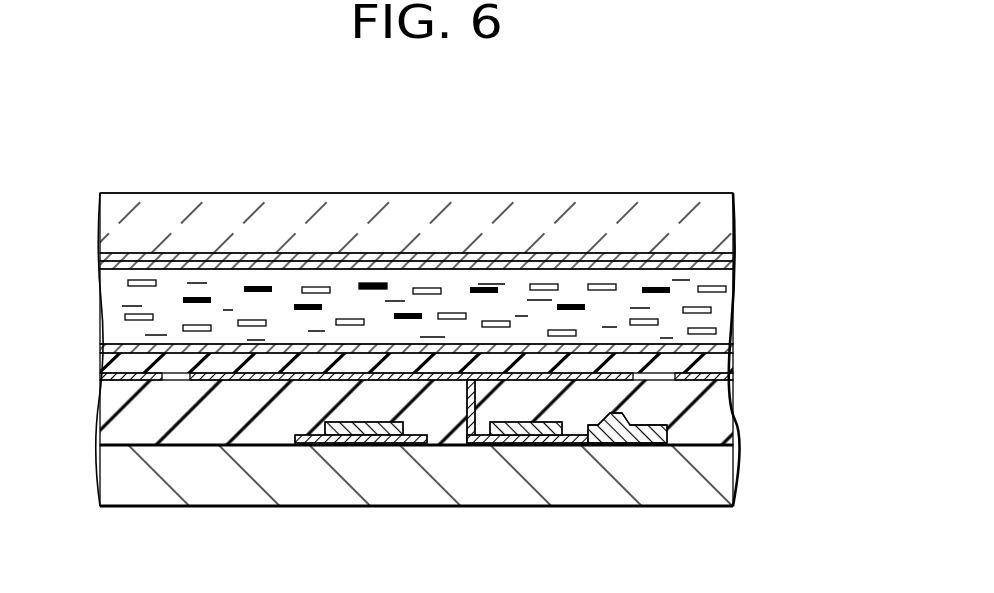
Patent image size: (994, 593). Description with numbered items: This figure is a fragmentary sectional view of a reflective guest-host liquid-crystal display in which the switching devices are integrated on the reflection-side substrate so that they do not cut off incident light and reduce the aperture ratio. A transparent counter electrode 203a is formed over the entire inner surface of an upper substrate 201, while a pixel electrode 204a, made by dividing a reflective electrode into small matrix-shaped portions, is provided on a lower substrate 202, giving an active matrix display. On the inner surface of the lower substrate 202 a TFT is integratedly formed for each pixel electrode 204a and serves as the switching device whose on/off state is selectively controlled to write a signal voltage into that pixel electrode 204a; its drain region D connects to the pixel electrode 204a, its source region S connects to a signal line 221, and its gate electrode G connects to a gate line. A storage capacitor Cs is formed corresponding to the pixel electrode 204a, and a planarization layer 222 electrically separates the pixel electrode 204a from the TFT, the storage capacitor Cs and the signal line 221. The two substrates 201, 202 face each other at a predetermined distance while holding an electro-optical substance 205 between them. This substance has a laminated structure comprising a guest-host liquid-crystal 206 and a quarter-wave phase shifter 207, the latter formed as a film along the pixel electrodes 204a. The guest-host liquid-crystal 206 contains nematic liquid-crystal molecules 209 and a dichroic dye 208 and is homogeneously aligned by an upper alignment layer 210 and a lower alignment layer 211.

The upper substrate 201 is at (697, 214).
The lower substrate 202 is at (700, 470).
The transparent counter electrode 203a is at (735, 255).
The pixel electrode 204a is at (266, 382).
The electro-optical substance 205 is at (88, 370).
The guest-host liquid-crystal 206 is at (720, 300).
The λ/4 phase shifter 207 is at (715, 366).
The dichroic dye 208 is at (368, 283).
The nematic liquid-crystal molecules 209 is at (430, 289).
The upper alignment layer 210 is at (730, 267).
The lower alignment layer 211 is at (735, 350).
The signal line 221 is at (642, 443).
The planarization layer 222 is at (712, 418).
The storage capacitor Cs is at (363, 446).
The thin-film transistor TFT is at (567, 483).
The gate electrode G is at (526, 413).
The drain region D is at (478, 460).
The source region S is at (571, 461).